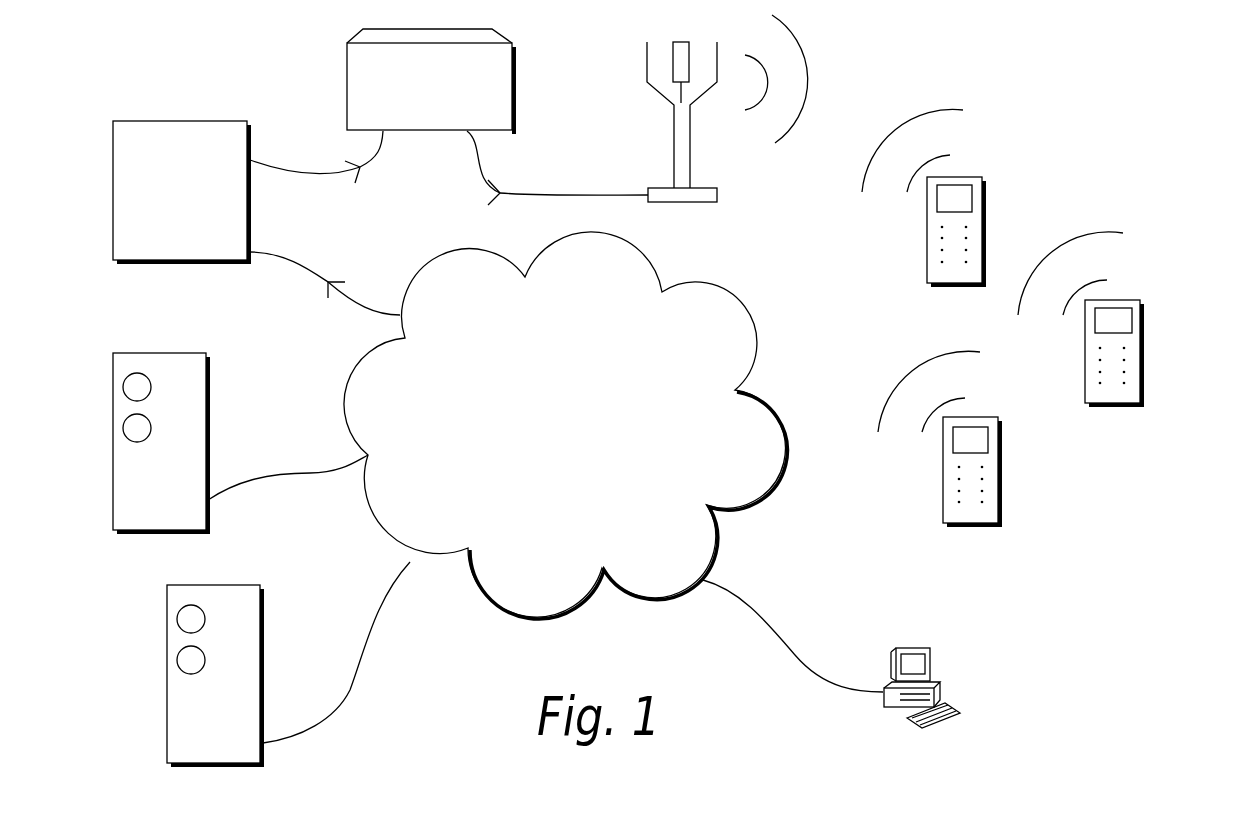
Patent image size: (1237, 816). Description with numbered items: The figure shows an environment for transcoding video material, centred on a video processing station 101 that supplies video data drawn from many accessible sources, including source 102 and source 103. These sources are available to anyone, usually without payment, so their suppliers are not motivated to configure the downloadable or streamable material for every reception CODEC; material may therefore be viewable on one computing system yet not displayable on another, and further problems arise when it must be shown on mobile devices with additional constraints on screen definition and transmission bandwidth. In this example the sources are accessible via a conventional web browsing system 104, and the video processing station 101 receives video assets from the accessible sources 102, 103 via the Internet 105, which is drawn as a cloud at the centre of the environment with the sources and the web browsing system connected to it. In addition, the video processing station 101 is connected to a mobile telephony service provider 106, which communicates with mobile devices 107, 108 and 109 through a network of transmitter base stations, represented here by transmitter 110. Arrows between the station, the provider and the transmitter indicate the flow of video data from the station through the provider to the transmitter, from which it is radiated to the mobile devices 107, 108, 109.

The video processing station 101 is at (237, 232).
The source 102 is at (193, 407).
The source 103 is at (247, 645).
The web browsing system 104 is at (953, 706).
The Internet 105 is at (593, 441).
The mobile telephony service provider 106 is at (505, 80).
The mobile device 107 is at (937, 273).
The mobile device 108 is at (1132, 388).
The mobile device 109 is at (990, 506).
The transmitter 110 is at (681, 165).